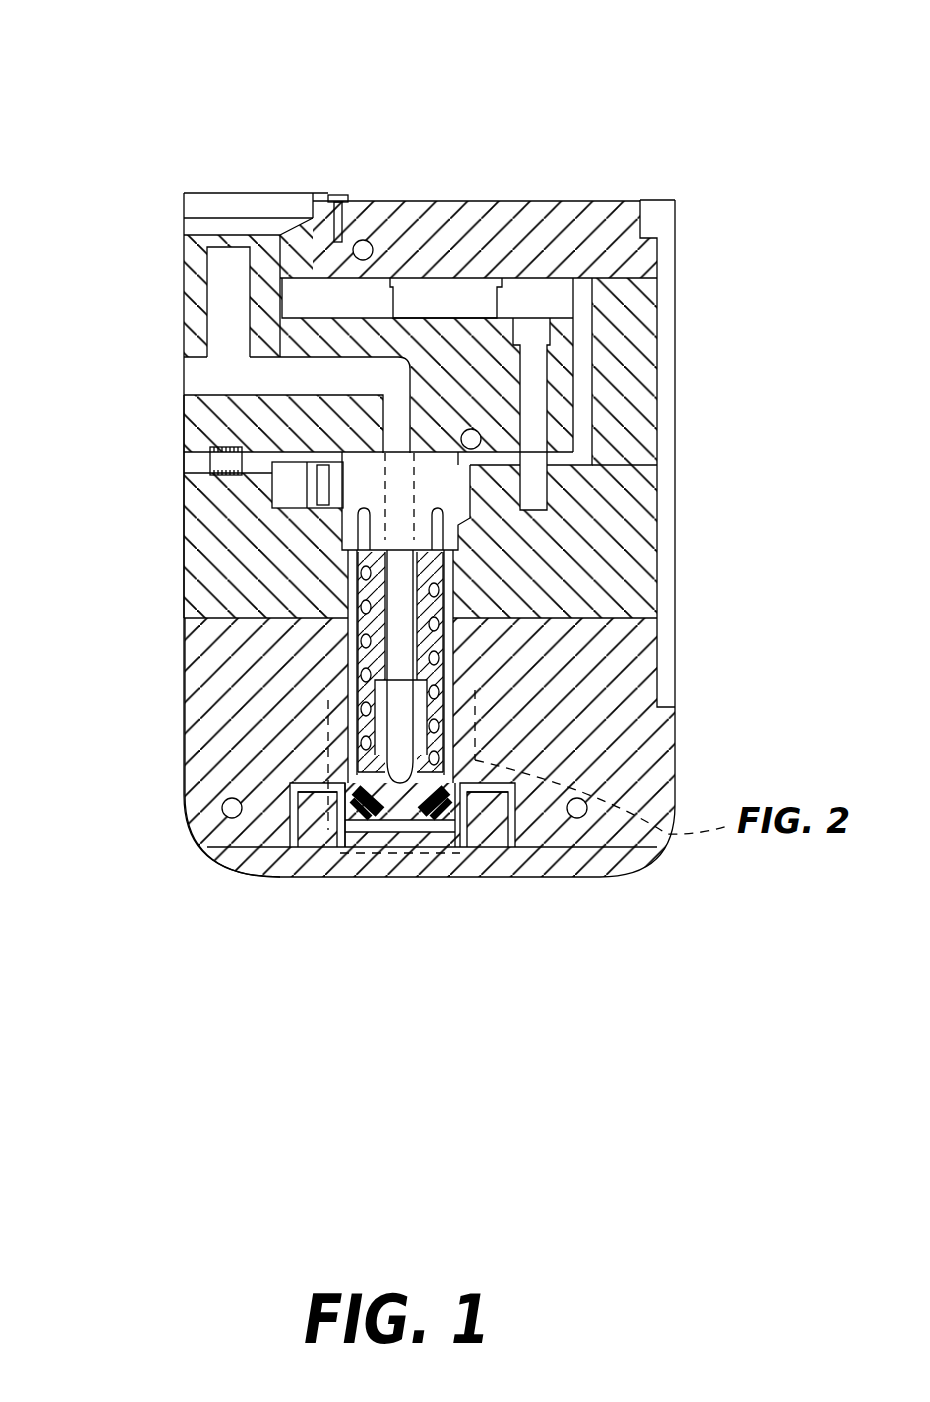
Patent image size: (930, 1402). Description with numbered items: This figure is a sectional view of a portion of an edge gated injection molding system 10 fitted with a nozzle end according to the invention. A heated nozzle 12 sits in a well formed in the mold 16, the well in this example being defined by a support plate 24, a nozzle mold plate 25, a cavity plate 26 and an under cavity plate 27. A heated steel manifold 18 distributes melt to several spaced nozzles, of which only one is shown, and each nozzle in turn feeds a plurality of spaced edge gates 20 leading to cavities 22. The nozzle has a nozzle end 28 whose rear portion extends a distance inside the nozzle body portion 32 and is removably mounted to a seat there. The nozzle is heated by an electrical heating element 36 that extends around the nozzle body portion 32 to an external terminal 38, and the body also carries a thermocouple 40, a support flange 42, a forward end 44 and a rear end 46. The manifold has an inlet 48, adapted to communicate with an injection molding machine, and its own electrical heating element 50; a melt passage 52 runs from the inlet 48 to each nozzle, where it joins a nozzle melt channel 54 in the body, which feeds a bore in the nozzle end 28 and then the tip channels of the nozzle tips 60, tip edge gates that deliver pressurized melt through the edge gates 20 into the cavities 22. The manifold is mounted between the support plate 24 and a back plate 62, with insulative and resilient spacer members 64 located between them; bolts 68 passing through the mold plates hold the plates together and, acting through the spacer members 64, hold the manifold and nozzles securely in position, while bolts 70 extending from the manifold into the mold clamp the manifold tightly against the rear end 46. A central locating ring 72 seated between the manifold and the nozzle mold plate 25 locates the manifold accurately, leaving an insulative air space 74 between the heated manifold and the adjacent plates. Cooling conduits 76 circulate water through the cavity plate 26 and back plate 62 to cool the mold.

The edge gated injection molding system 10 is at (648, 88).
The heated nozzle 12 is at (453, 572).
The mold 16 is at (185, 770).
The heated steel manifold 18 is at (185, 297).
The edge gates 20 is at (320, 848).
The cavities 22 is at (300, 840).
The support plate 24 is at (655, 395).
The nozzle mold plate 25 is at (225, 540).
The cavity plate 26 is at (290, 728).
The under cavity plate 27 is at (300, 870).
The nozzle end 28 is at (405, 848).
The nozzle body portion 32 is at (462, 552).
The electrical heating element 36 is at (365, 715).
The external terminal 38 is at (184, 513).
The thermocouple 40 is at (443, 640).
The support flange 42 is at (400, 547).
The forward end 44 is at (360, 850).
The rear end 46 is at (365, 456).
The inlet 48 is at (235, 240).
The electrical heating element 50 is at (482, 440).
The melt passage 52 is at (183, 383).
The nozzle melt channel 54 is at (443, 717).
The nozzle tips 60 is at (372, 815).
The back plate 62 is at (552, 257).
The spacer members 64 is at (462, 302).
The bolts 68 is at (660, 228).
The bolts 70 is at (535, 375).
The central locating ring 72 is at (220, 463).
The insulative air space 74 is at (562, 300).
The cooling conduits 76 is at (335, 193).